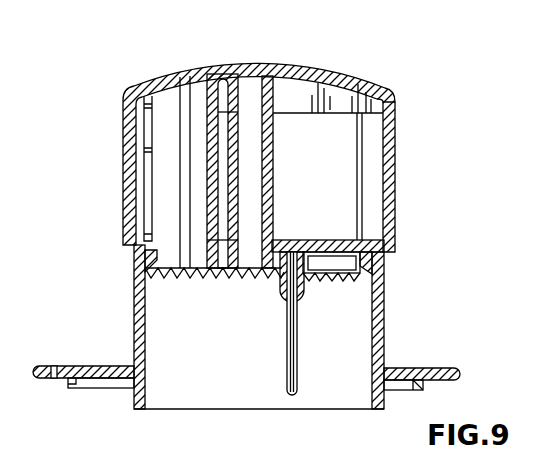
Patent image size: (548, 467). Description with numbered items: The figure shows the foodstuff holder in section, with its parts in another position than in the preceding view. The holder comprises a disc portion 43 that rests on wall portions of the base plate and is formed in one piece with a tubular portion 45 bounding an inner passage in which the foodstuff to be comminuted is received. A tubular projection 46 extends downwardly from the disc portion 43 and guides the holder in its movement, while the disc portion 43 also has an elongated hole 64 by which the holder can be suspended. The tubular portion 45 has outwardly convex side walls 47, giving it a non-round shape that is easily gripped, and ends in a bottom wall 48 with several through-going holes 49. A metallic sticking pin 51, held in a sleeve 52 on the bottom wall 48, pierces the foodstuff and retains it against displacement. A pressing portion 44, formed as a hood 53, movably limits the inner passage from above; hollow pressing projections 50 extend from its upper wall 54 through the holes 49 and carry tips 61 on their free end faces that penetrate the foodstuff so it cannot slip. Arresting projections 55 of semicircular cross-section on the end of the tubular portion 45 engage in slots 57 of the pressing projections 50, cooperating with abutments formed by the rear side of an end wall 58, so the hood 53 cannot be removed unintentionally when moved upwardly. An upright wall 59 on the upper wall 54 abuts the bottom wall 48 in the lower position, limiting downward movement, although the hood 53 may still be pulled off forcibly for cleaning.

The disc portion 43 is at (443, 368).
The pressing portion 44 is at (291, 141).
The tubular portion 45 is at (249, 345).
The tubular projection 46 is at (78, 388).
The outwardly convex side walls 47 is at (83, 383).
The bottom wall 48 is at (332, 240).
The through-going holes 49 is at (214, 245).
The pressing projections 50 is at (319, 151).
The sticking pin 51 is at (298, 352).
The sleeve 52 is at (301, 288).
The hood 53 is at (394, 134).
The upper wall 54 is at (327, 72).
The arresting projections 55 is at (136, 257).
The slots 57 is at (148, 150).
The end wall 58 is at (168, 280).
The upright wall 59 is at (336, 131).
The tips 61 is at (206, 280).
The elongated hole 64 is at (55, 380).